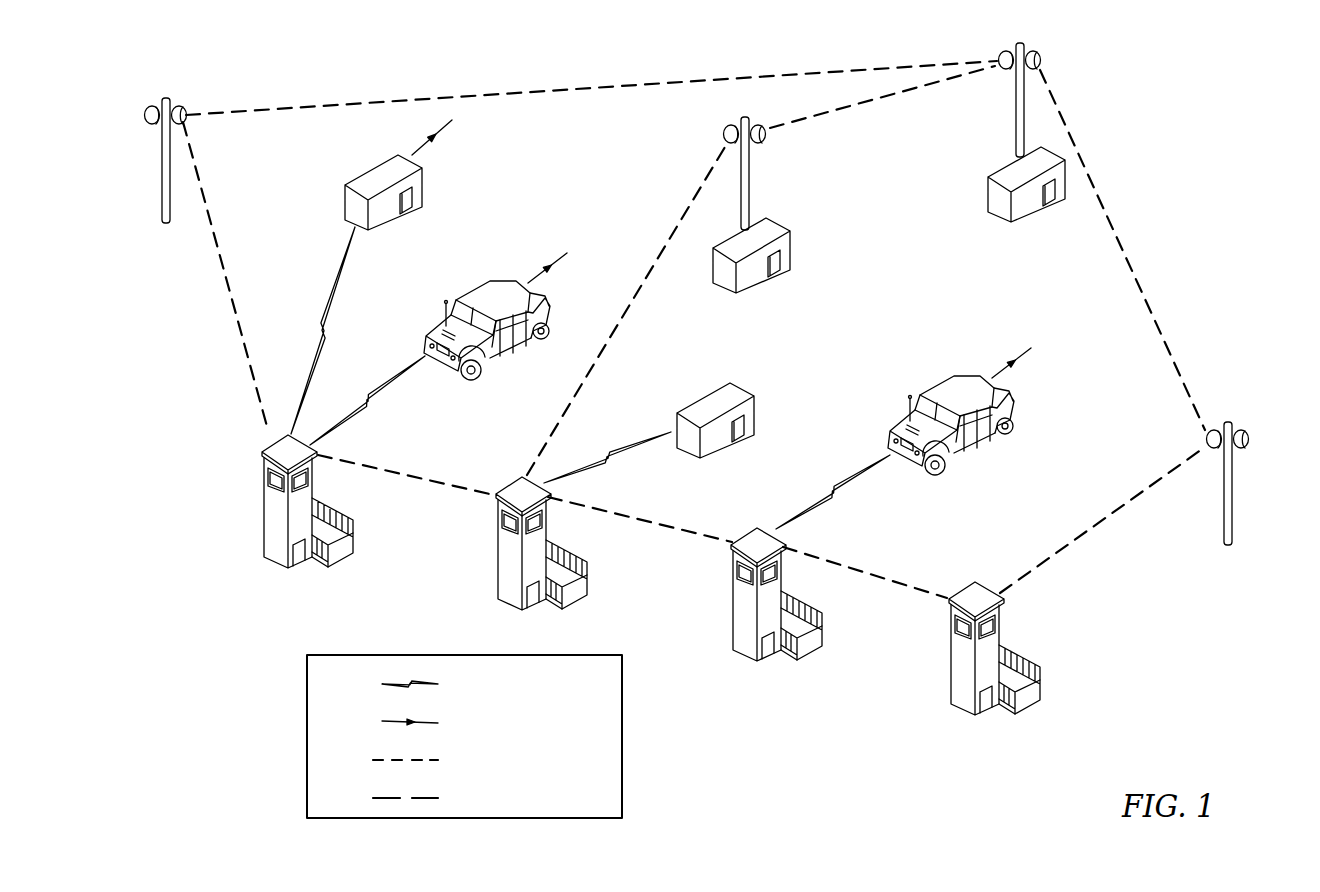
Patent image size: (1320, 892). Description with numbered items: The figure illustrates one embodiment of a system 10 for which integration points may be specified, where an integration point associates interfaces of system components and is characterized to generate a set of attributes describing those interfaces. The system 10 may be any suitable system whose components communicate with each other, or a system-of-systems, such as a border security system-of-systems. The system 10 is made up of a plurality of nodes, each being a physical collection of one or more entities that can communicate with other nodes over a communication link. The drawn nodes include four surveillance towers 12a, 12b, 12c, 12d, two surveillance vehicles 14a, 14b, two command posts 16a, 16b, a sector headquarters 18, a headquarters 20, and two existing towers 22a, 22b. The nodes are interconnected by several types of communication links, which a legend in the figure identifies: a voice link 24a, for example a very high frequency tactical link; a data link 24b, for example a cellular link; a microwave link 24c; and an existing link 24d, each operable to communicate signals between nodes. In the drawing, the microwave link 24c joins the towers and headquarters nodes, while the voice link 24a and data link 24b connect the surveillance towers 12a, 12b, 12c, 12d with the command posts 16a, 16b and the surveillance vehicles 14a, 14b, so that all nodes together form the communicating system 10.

The system 10 is at (1235, 162).
The surveillance tower 12a is at (263, 508).
The surveillance tower 12b is at (493, 550).
The surveillance tower 12c is at (730, 598).
The surveillance tower 12d is at (948, 655).
The surveillance vehicle 14a is at (473, 295).
The surveillance vehicle 14b is at (937, 388).
The command post 16a is at (370, 170).
The command post 16b is at (702, 393).
The sector headquarters 18 is at (780, 223).
The headquarters 20 is at (1000, 167).
The existing tower 22a is at (162, 172).
The existing tower 22b is at (1233, 495).
The voice link 24a is at (383, 683).
The data link 24b is at (383, 720).
The microwave link 24c is at (375, 760).
The existing link 24d is at (385, 798).